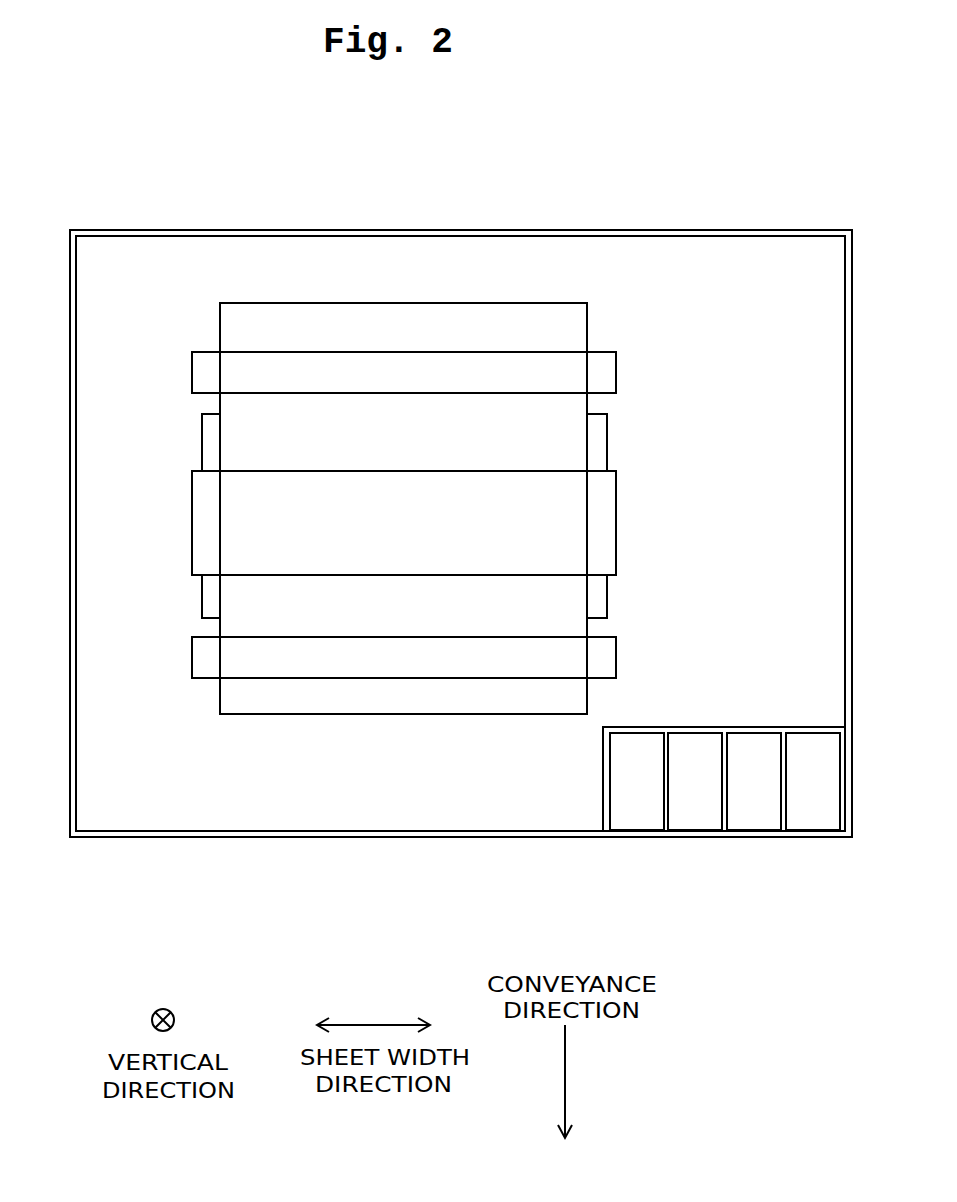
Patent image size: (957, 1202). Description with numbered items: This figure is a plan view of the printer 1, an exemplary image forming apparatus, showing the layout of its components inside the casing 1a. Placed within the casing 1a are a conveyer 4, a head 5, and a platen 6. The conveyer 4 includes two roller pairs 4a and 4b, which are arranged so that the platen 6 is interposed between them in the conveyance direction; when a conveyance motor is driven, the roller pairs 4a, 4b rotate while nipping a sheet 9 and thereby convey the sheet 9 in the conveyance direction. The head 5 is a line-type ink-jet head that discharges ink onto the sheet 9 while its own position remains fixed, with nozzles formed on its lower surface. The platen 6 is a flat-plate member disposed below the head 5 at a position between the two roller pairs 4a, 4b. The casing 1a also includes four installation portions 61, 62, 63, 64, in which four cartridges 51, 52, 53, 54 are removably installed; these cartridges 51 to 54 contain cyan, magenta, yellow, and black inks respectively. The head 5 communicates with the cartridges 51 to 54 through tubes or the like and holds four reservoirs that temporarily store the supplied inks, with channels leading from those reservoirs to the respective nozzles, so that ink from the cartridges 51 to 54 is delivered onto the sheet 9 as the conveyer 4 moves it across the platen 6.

The printer 1 is at (461, 477).
The casing 1a is at (602, 229).
The conveyer 4 is at (398, 480).
The roller pair 4a is at (193, 369).
The roller pair 4b is at (203, 652).
The head 5 is at (595, 536).
The platen 6 is at (595, 433).
The sheet 9 is at (232, 695).
The cartridge 51 is at (636, 748).
The cartridge 52 is at (691, 748).
The cartridge 53 is at (747, 748).
The cartridge 54 is at (809, 748).
The installation portion 61 is at (663, 795).
The installation portion 62 is at (721, 795).
The installation portion 63 is at (780, 795).
The installation portion 64 is at (839, 795).